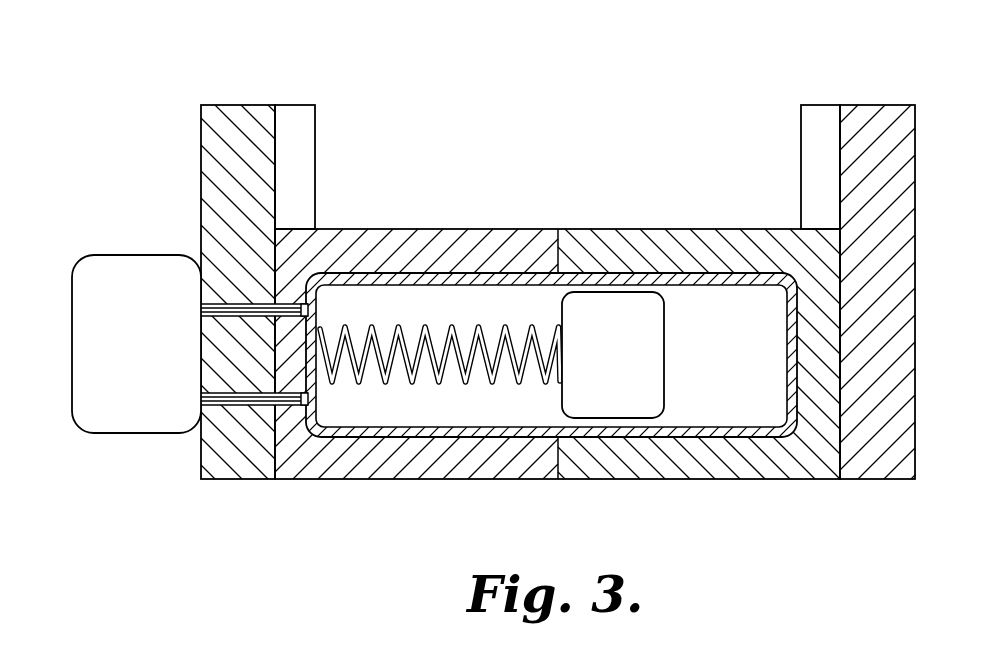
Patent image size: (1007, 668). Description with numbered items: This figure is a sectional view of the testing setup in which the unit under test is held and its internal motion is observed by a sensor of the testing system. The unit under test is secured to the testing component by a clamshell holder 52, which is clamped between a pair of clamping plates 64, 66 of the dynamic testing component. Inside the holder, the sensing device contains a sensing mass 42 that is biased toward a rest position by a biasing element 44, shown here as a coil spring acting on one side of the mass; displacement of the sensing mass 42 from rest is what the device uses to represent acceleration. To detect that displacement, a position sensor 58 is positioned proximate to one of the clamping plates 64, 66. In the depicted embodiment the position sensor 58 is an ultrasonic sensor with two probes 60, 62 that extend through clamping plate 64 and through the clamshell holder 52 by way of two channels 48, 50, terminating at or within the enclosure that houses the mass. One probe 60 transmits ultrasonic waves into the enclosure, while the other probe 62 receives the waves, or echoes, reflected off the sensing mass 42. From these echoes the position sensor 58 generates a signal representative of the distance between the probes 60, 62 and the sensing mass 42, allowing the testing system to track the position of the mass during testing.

The sensing mass 42 is at (655, 386).
The biasing element 44 is at (452, 330).
The channel 48 is at (238, 303).
The channel 50 is at (232, 370).
The clamshell holder 52 is at (470, 243).
The position sensor 58 is at (80, 256).
The probe 60 is at (307, 308).
The probe 62 is at (307, 398).
The clamping plate 64 is at (240, 118).
The clamping plate 66 is at (885, 115).